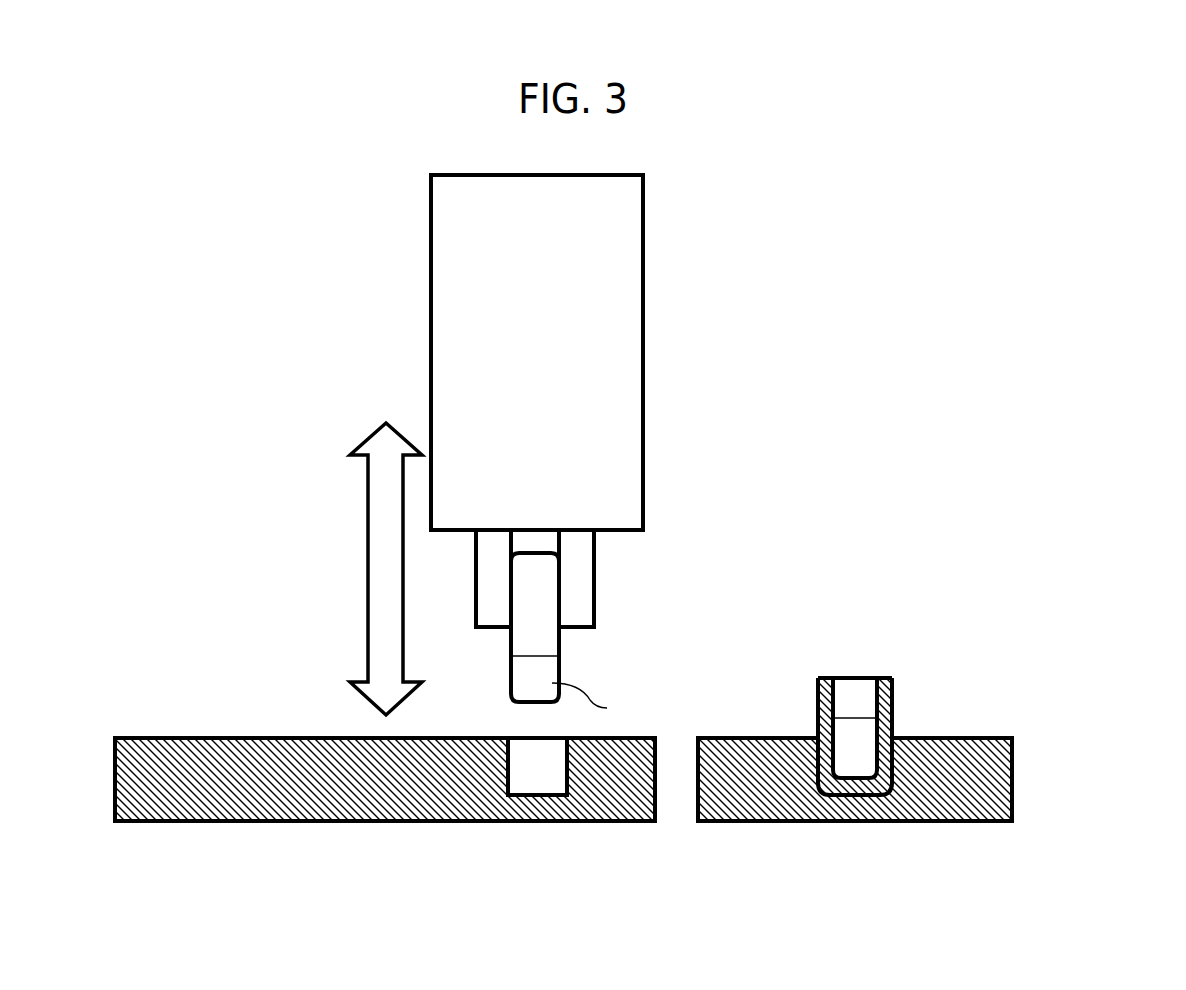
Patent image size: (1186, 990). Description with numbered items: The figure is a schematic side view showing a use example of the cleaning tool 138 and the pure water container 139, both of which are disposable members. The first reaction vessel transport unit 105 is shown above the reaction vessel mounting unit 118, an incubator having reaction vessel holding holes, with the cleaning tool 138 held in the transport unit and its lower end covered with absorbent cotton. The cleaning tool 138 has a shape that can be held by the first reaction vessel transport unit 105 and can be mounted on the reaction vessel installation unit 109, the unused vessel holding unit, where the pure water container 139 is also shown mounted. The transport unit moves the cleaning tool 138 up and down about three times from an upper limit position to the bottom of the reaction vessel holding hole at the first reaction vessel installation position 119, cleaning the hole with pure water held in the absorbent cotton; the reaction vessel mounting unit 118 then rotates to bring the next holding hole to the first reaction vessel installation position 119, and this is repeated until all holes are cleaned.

The first reaction vessel transport unit 105 is at (630, 275).
The cleaning tool 138 is at (552, 635).
The pure water container 139 is at (892, 707).
The reaction vessel mounting unit 118 is at (358, 813).
The first reaction vessel installation position 119 is at (558, 777).
The reaction vessel installation unit 109 is at (897, 810).